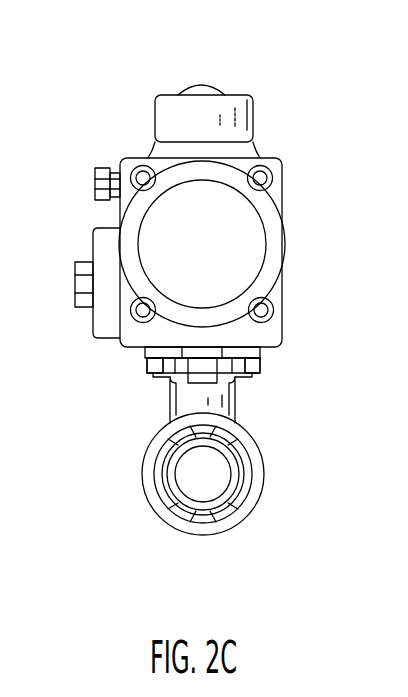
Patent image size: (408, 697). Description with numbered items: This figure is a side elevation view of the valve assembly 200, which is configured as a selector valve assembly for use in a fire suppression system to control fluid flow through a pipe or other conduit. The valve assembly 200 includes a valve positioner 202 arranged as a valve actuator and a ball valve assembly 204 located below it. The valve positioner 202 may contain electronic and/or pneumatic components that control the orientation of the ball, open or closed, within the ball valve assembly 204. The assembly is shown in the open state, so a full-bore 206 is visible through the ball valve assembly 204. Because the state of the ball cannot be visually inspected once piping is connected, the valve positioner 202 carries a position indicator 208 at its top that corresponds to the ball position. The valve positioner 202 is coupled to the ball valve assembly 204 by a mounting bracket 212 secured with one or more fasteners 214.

The valve assembly 200 is at (190, 310).
The valve positioner 202 is at (280, 198).
The ball valve assembly 204 is at (201, 548).
The full-bore 206 is at (180, 483).
The position indicator 208 is at (228, 100).
The mounting bracket 212 is at (260, 355).
The fasteners 214 is at (150, 362).